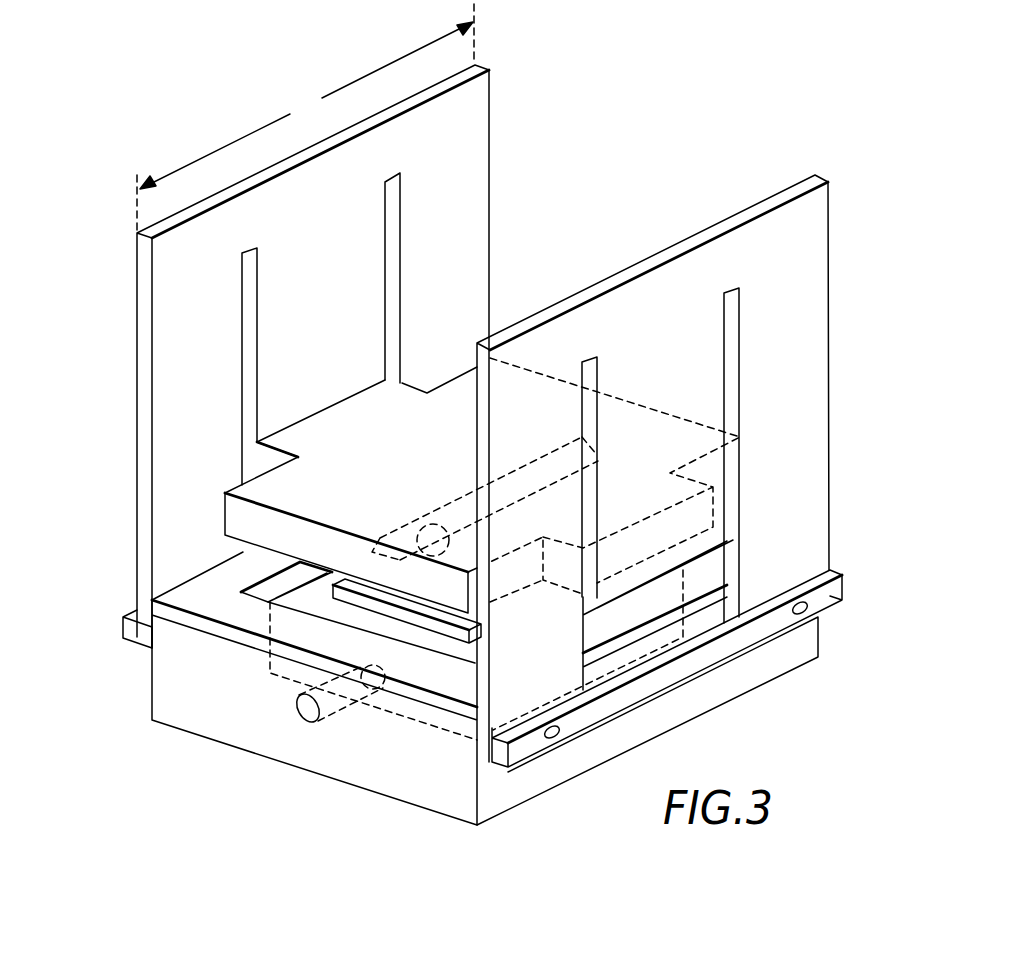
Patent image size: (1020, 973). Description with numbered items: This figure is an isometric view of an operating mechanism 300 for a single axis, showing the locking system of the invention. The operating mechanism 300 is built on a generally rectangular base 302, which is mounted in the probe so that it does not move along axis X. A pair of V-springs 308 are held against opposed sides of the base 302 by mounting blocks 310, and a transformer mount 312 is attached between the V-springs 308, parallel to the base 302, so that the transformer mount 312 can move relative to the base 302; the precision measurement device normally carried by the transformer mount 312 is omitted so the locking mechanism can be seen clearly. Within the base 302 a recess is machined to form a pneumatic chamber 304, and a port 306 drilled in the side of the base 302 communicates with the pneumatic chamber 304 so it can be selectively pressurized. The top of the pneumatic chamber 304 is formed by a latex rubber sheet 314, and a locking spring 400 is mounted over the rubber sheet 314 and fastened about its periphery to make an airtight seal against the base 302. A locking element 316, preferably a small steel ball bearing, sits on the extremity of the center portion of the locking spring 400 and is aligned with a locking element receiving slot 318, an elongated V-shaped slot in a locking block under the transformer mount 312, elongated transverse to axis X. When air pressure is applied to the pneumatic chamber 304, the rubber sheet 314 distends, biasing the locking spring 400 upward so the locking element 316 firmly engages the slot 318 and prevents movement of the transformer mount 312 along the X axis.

The operating mechanism 300 is at (172, 772).
The base 302 is at (797, 668).
The pneumatic chamber 304 is at (423, 723).
The port 306 is at (311, 713).
The V-springs 308 is at (490, 131).
The mounting blocks 310 is at (845, 592).
The transformer mount 312 is at (238, 517).
The rubber sheet 314 is at (305, 595).
The locking element 316 is at (431, 527).
The locking element receiving slot 318 is at (553, 455).
The locking spring 400 is at (715, 567).